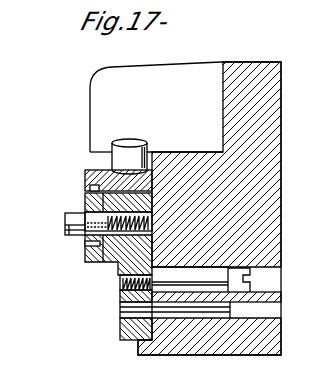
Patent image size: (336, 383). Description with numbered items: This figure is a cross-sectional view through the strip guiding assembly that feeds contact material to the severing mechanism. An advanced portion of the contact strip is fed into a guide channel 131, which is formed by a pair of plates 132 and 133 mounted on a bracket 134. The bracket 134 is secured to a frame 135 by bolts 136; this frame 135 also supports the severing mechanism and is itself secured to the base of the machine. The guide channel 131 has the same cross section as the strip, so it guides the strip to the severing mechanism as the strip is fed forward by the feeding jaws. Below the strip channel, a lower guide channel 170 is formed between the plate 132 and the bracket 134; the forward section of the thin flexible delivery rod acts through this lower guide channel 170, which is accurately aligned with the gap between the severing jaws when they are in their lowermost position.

The guide channel 131 is at (88, 190).
The plate 132 is at (95, 207).
The plate 133 is at (117, 185).
The bracket 134 is at (126, 248).
The frame 135 is at (265, 215).
The bolt 136 is at (246, 277).
The lower guide channel 170 is at (88, 245).